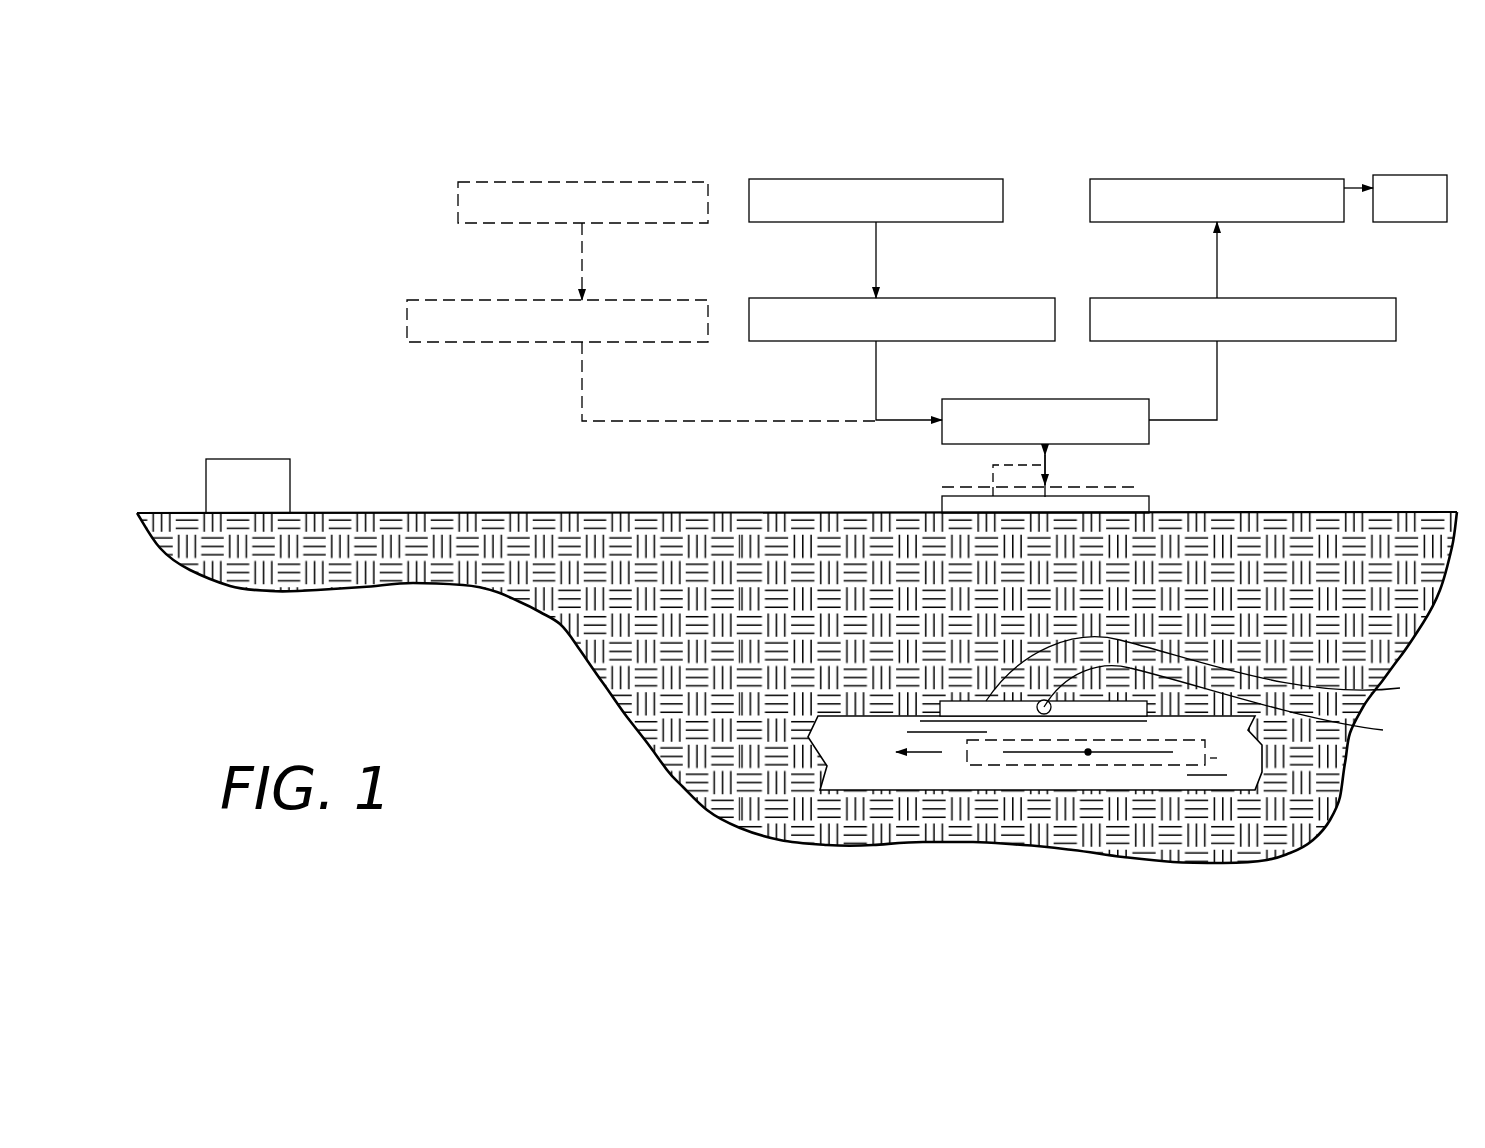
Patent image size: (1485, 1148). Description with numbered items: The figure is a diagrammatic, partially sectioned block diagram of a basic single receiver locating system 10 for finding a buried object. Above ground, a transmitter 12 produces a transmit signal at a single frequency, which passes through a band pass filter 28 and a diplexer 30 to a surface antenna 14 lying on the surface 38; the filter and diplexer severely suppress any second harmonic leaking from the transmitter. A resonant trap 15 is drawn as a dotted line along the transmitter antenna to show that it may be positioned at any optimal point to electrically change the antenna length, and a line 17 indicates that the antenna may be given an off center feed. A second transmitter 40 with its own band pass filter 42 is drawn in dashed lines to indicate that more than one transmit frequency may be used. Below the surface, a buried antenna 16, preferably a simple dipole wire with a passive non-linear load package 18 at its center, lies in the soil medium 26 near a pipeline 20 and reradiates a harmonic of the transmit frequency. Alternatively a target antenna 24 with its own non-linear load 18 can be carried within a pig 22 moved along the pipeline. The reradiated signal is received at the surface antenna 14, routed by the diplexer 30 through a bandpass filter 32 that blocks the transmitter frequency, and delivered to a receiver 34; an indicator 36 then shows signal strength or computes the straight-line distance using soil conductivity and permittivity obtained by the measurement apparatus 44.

The locating system 10 is at (292, 262).
The transmitter 12 is at (989, 224).
The surface antenna 14 is at (942, 506).
The resonant trap 15 is at (1139, 487).
The buried antenna 16 is at (1180, 679).
The off center feed 17 is at (990, 465).
The non-linear load package 18 is at (1090, 756).
The pipeline 20 is at (1207, 792).
The pig 22 is at (1053, 765).
The target antenna 24 is at (1017, 752).
The soil medium 26 is at (587, 541).
The band pass filter 28 is at (749, 298).
The diplexer 30 is at (1040, 399).
The bandpass filter 32 is at (1277, 341).
The receiver 34 is at (1092, 222).
The indicator 36 is at (1394, 222).
The surface 38 is at (1195, 512).
The transmitter 40 is at (458, 206).
The band pass filter 42 is at (407, 333).
The conductivity/permittivity measurement apparatus 44 is at (290, 470).